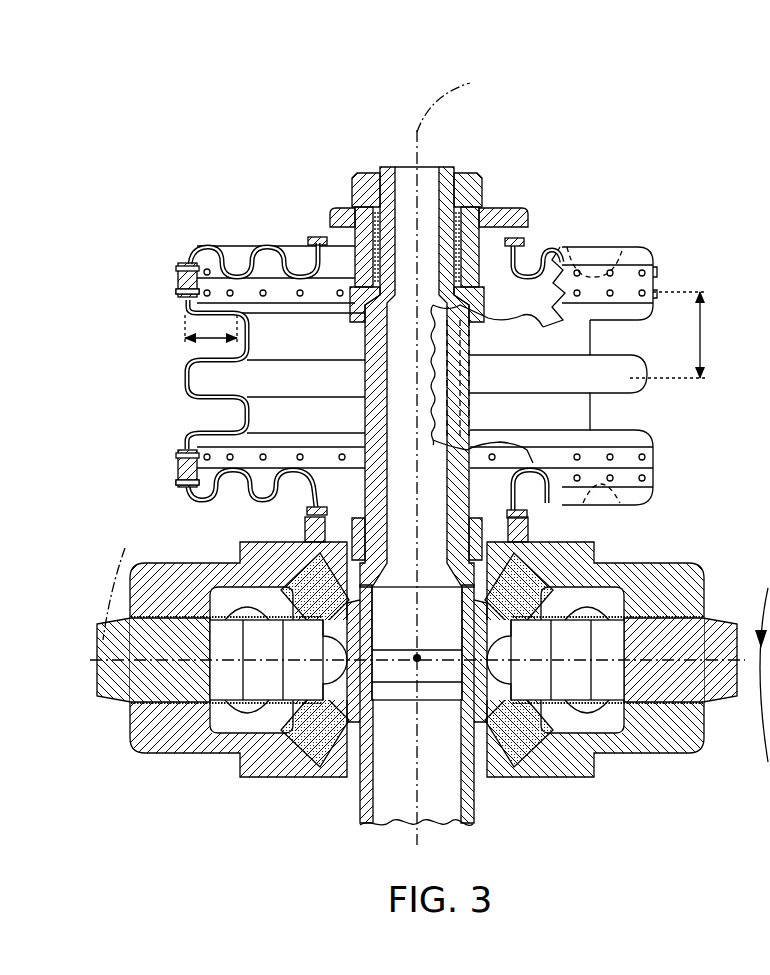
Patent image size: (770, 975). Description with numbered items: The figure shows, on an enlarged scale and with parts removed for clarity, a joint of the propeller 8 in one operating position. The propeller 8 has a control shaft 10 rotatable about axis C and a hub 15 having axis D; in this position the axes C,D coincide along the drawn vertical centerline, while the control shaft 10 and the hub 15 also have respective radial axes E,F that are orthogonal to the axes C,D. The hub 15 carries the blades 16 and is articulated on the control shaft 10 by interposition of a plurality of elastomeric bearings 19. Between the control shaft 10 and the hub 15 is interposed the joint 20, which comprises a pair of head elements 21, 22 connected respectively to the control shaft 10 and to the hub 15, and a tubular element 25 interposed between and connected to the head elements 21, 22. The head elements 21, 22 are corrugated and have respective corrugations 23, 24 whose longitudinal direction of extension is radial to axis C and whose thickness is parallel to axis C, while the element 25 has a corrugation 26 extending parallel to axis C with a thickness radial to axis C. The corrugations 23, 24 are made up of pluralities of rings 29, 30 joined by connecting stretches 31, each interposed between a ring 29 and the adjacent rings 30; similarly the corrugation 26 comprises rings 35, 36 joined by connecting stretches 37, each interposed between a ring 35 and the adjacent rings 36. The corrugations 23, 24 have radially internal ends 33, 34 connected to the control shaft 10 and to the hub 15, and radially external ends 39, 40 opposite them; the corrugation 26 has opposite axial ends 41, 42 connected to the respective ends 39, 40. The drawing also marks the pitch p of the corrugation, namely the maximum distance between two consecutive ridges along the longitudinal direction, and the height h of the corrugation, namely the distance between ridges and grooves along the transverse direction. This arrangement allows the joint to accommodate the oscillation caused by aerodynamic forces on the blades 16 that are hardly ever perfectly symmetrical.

The propeller 8 is at (588, 157).
The control shaft 10 is at (405, 193).
The hub 15 is at (190, 723).
The blades 16 is at (170, 677).
The elastomeric bearings 19 is at (525, 585).
The joint 20 is at (655, 240).
The head element 21 is at (267, 230).
The head element 22 is at (228, 495).
The corrugation 23 is at (229, 226).
The corrugation 24 is at (243, 453).
The tubular element 25 is at (657, 390).
The corrugation 26 is at (190, 407).
The rings 29 is at (207, 247).
The rings 30 is at (237, 280).
The connecting stretches 31 is at (287, 262).
The radially internal end 33 is at (340, 240).
The radially internal end 34 is at (300, 497).
The rings 35 is at (185, 377).
The rings 36 is at (247, 337).
The connecting stretches 37 is at (222, 370).
The radially external end 39 is at (187, 263).
The radially external end 40 is at (188, 487).
The axial end 41 is at (183, 300).
The axial end 42 is at (188, 450).
The height of the corrugation h is at (210, 333).
The pitch of the corrugation p is at (672, 335).
The axes of the propeller and hub C,D is at (467, 99).
The axes of the control shaft and hub E,F is at (122, 582).